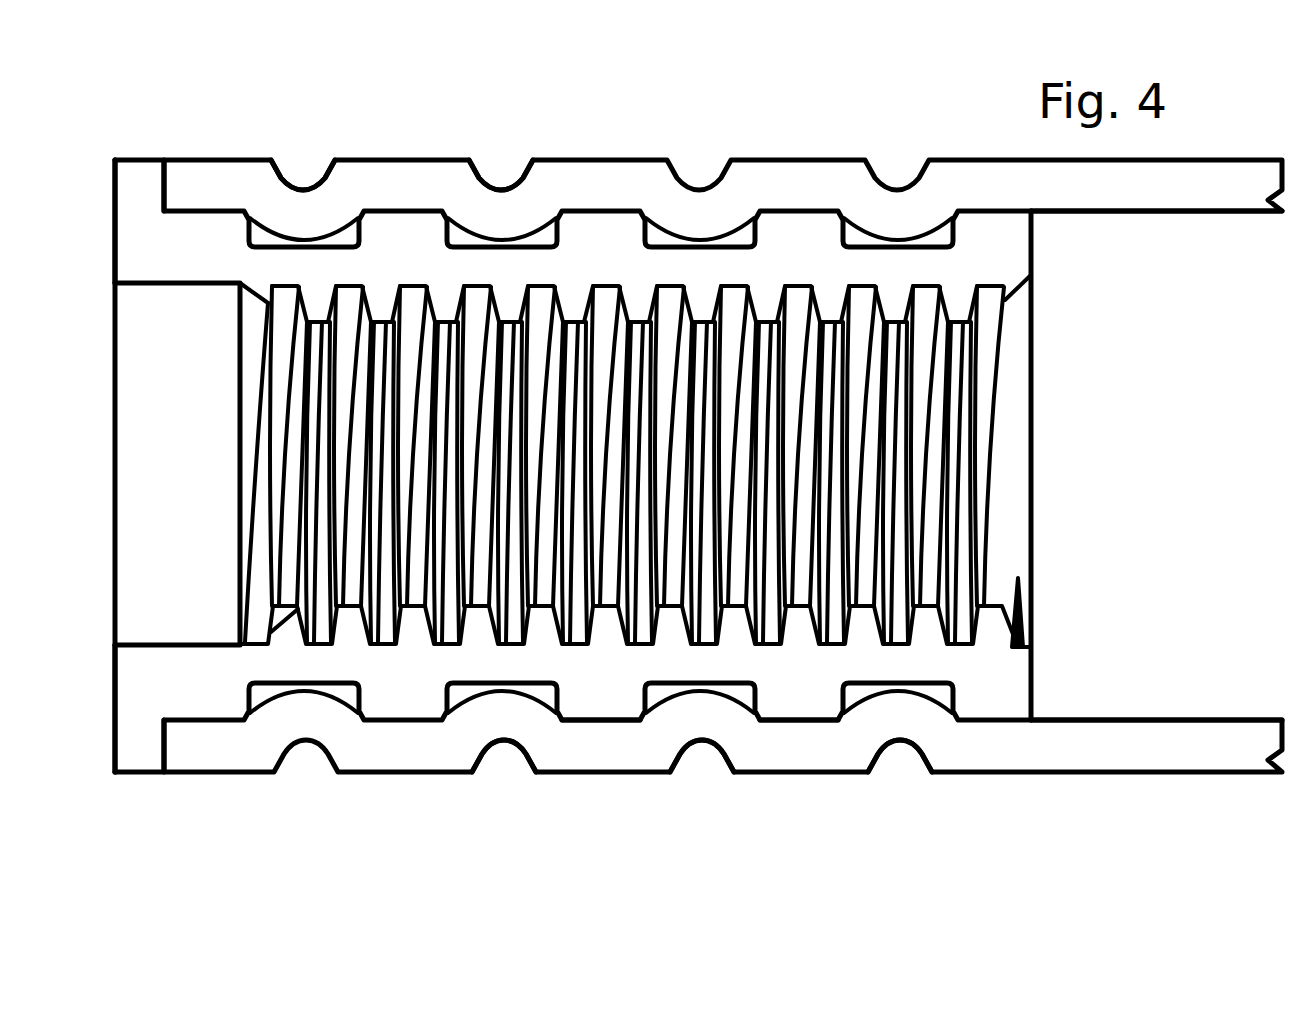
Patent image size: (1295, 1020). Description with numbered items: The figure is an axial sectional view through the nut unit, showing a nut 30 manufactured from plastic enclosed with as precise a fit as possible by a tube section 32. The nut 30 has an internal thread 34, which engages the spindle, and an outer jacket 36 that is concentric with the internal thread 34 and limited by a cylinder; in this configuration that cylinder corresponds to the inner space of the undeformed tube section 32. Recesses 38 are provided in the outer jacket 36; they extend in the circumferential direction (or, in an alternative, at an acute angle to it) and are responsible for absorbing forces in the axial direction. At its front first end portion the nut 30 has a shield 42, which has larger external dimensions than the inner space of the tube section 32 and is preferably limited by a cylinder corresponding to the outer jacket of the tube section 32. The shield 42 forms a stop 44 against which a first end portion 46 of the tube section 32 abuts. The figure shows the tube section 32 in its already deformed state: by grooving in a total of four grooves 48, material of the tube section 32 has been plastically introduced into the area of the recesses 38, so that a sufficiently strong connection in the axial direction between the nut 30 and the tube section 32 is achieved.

The nut 30 is at (1000, 675).
The tube section 32 is at (1162, 747).
The internal thread 34 is at (699, 338).
The outer jacket 36 is at (789, 722).
The recesses 38 is at (542, 240).
The shield 42 is at (133, 192).
The stop 44 is at (167, 742).
The first end portion 46 is at (538, 798).
The grooves 48 is at (502, 190).